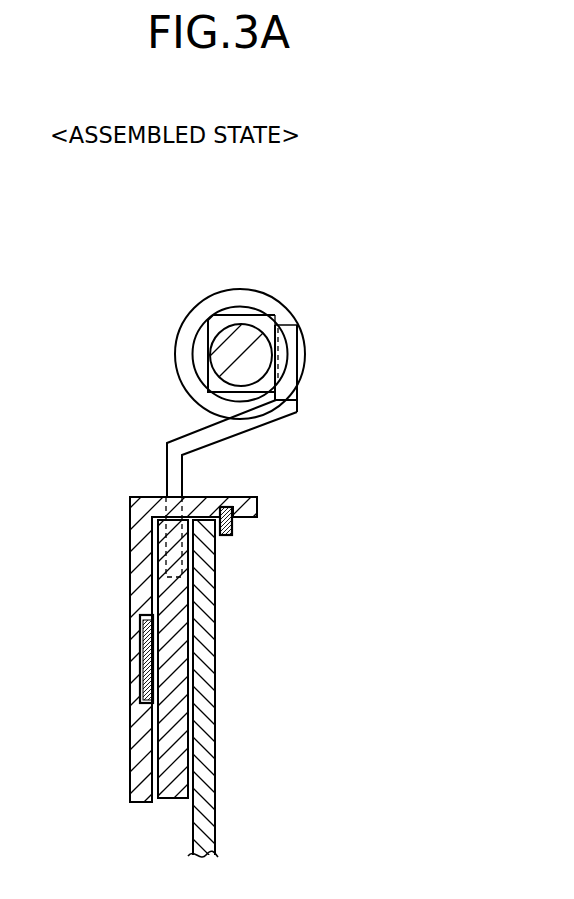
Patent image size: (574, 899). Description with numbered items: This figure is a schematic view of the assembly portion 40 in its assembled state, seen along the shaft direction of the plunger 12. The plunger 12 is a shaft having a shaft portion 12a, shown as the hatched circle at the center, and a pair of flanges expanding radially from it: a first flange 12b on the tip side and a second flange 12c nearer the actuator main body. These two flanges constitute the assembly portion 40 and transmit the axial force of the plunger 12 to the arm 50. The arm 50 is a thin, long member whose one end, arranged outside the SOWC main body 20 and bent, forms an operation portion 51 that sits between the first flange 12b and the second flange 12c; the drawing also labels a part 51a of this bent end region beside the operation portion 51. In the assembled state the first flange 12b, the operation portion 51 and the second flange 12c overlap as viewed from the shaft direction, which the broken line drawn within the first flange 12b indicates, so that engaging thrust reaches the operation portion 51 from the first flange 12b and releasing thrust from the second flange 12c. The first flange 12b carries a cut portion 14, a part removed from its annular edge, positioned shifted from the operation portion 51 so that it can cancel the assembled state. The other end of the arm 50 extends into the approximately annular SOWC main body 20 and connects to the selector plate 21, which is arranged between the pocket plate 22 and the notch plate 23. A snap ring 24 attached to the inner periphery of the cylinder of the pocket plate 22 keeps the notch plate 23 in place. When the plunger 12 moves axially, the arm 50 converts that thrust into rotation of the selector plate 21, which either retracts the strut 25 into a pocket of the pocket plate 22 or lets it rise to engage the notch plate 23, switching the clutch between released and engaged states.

The assembly portion 40 is at (243, 373).
The plunger 12 is at (223, 333).
The shaft portion 12a is at (224, 325).
The first flange 12b is at (270, 313).
The second flange 12c is at (246, 291).
The cut portion 14 is at (197, 333).
The arm 50 is at (170, 432).
The operation portion 51 is at (290, 363).
The tab of holding portion 51a is at (288, 392).
The SOWC main body 20 is at (197, 677).
The selector plate 21 is at (168, 800).
The pocket plate 22 is at (143, 730).
The notch plate 23 is at (208, 723).
The snap ring 24 is at (227, 538).
The strut 25 is at (141, 657).